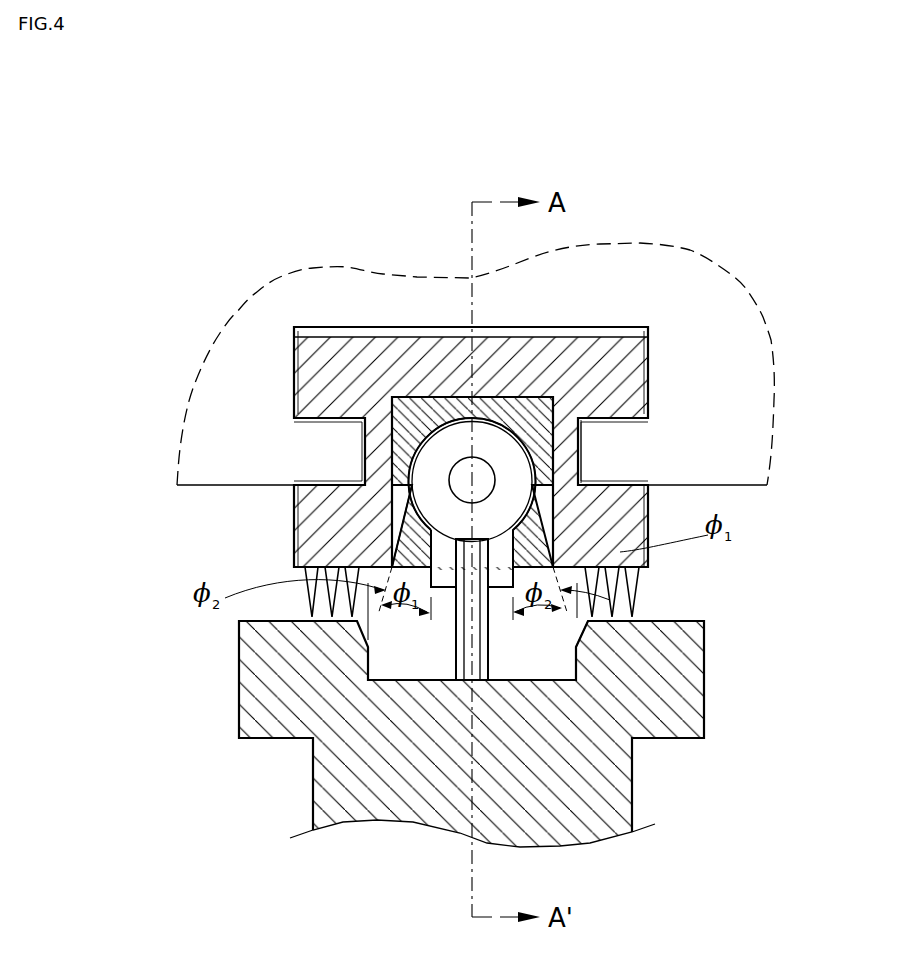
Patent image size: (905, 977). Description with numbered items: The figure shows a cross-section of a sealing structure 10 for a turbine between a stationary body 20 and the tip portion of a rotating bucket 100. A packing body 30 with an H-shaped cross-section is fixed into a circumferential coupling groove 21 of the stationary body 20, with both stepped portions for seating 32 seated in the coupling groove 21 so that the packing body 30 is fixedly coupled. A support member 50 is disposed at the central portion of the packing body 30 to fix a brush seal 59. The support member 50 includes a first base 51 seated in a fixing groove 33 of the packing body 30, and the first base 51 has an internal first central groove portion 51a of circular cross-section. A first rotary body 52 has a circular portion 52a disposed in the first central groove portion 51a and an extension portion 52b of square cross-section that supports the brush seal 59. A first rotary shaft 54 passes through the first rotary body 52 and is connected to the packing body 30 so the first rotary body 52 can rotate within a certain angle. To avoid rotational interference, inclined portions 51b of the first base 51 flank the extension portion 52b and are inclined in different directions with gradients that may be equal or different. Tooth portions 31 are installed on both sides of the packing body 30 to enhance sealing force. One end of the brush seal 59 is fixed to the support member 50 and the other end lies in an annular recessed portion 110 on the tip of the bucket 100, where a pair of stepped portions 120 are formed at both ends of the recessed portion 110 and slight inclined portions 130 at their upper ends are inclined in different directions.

The inkjet head assembly 10 is at (360, 113).
The stationary body 20 is at (727, 337).
The coupling groove 21 is at (441, 329).
The packing body 30 is at (630, 387).
The tooth portion 31 is at (640, 588).
The stepped portions for seating 32 is at (627, 428).
The fixing groove 33 is at (417, 410).
The support member 50 is at (384, 450).
The first base 51 is at (364, 481).
The first central groove portion 51a is at (412, 490).
The inclined portions 51b is at (392, 565).
The first rotary body 52 is at (712, 142).
The circular portion 52a is at (508, 447).
The extension portion 52b is at (503, 567).
The first rotary shaft 54 is at (460, 477).
The brush seal 59 is at (458, 639).
The bucket 100 is at (265, 690).
The recessed portion 110 is at (400, 680).
The stepped portions 120 is at (578, 647).
The slight inclined portions 130 is at (577, 660).